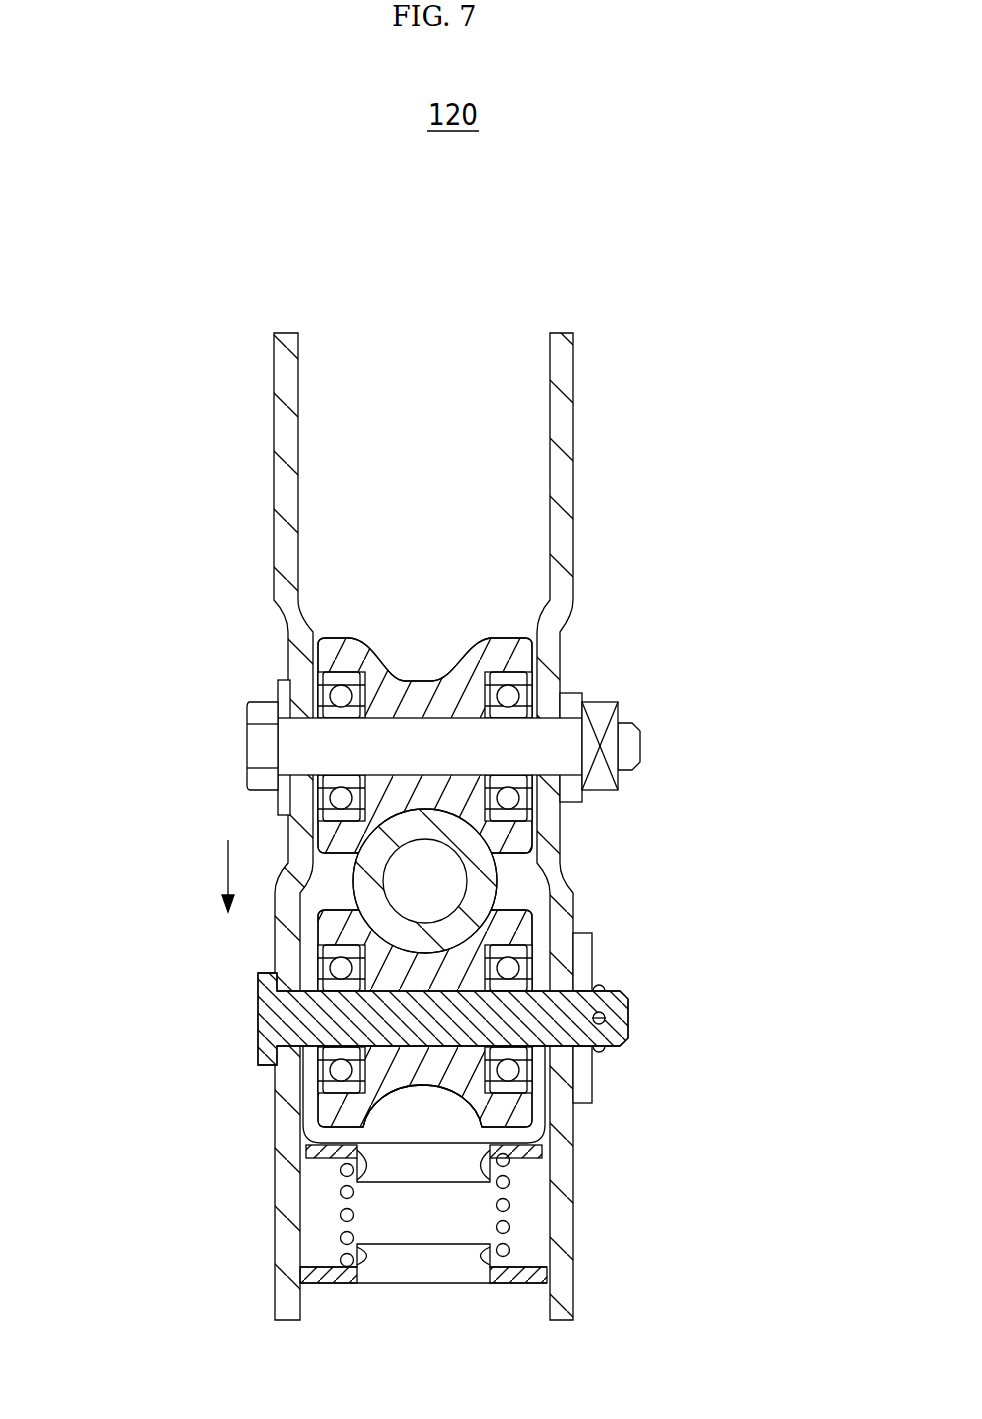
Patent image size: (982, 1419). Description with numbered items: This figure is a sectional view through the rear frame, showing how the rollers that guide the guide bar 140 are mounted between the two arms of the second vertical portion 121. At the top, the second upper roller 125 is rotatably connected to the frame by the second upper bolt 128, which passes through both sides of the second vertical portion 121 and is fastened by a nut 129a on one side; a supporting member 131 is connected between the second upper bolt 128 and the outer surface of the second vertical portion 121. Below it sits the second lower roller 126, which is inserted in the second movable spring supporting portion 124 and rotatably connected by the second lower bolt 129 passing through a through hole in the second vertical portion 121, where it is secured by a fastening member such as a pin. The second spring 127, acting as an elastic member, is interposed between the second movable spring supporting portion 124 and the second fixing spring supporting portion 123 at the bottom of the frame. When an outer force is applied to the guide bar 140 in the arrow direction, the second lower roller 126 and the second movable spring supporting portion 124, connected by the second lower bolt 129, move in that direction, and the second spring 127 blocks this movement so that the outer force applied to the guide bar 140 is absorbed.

The second vertical portion 121 is at (565, 412).
The second fixing spring supporting portion 123 is at (325, 1275).
The second movable spring supporting portion 124 is at (305, 1127).
The second upper roller 125 is at (422, 682).
The second lower roller 126 is at (422, 1080).
The second spring 127 is at (510, 1229).
The second upper bolt 128 is at (260, 737).
The second lower bolt 129 is at (258, 1008).
The nut 129a is at (597, 713).
The supporting member 131 is at (283, 690).
The guide bar 140 is at (483, 885).